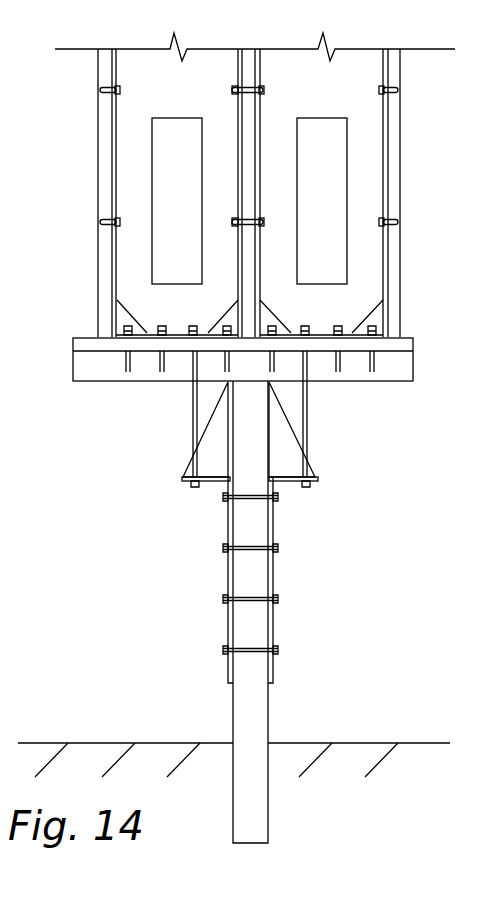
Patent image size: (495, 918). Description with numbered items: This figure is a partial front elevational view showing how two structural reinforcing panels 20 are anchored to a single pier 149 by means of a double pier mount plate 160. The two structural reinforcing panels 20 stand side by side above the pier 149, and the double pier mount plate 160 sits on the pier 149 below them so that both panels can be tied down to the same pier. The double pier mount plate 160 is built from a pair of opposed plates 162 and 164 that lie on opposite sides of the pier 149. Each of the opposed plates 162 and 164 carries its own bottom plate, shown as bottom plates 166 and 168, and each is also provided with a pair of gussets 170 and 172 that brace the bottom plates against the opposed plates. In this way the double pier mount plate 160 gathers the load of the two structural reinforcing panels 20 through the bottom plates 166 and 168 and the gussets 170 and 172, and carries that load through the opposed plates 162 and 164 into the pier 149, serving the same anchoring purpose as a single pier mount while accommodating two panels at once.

The structural reinforcing panel 20 is at (125, 277).
The pier 149 is at (258, 718).
The double pier mount plate 160 is at (281, 504).
The opposed plate 162 is at (268, 577).
The opposed plate 164 is at (230, 582).
The bottom plate 166 is at (290, 481).
The bottom plate 168 is at (210, 481).
The gusset 170 is at (288, 428).
The gusset 172 is at (217, 430).